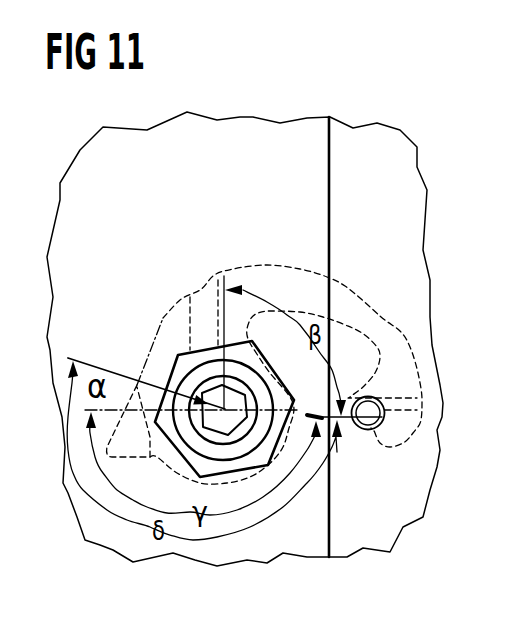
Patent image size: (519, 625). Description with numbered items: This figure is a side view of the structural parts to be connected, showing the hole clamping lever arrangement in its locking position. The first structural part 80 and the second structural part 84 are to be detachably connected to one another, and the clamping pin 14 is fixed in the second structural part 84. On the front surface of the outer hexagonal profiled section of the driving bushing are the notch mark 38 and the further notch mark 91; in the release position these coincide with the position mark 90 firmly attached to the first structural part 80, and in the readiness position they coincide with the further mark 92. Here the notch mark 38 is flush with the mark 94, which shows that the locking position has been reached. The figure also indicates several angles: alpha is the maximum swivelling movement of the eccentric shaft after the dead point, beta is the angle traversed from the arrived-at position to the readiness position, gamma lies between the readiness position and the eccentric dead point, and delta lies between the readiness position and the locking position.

The first structural part 80 is at (242, 130).
The second structural part 84 is at (380, 138).
The notch mark 38 is at (184, 362).
The position mark 90 is at (221, 330).
The further notch mark 91 is at (277, 400).
The further mark 92 is at (330, 430).
The mark 94 is at (150, 370).
The clamping pin 14 is at (373, 417).